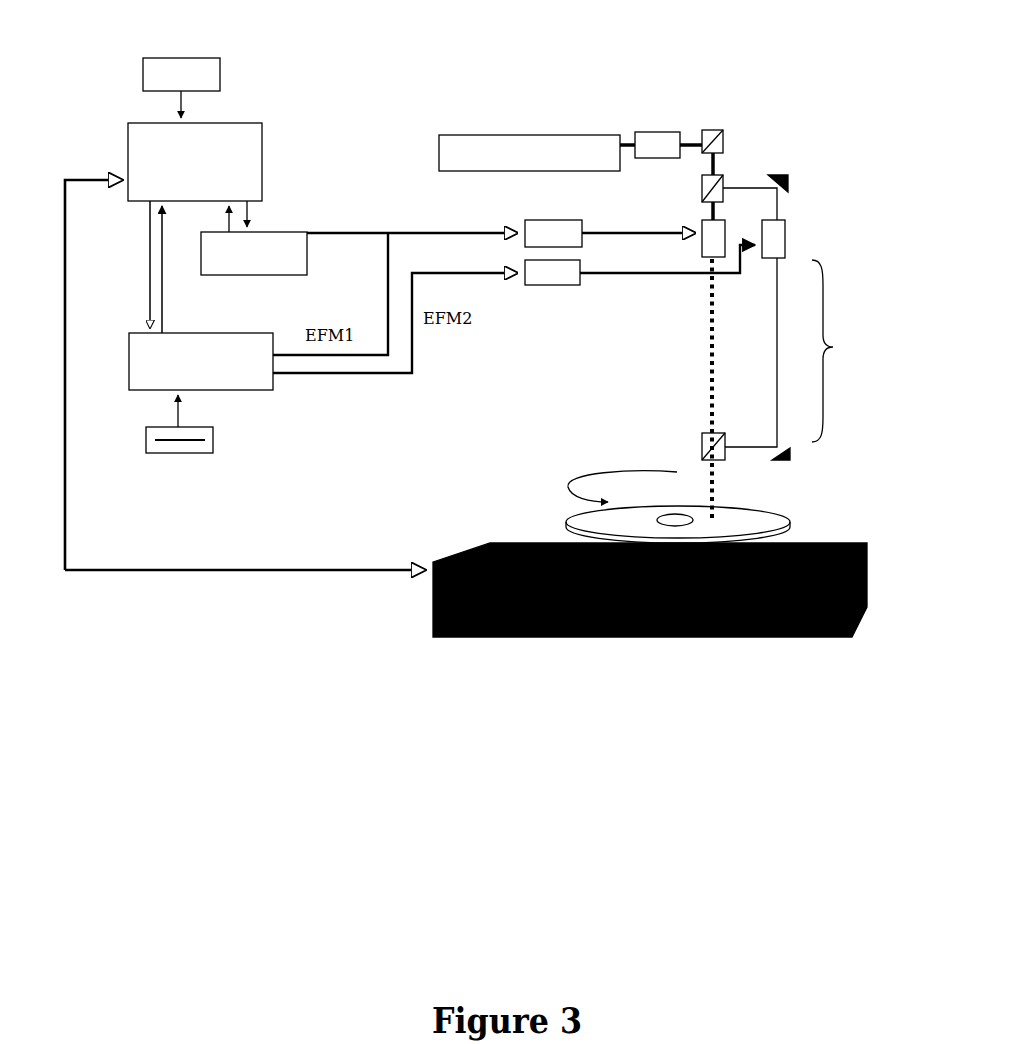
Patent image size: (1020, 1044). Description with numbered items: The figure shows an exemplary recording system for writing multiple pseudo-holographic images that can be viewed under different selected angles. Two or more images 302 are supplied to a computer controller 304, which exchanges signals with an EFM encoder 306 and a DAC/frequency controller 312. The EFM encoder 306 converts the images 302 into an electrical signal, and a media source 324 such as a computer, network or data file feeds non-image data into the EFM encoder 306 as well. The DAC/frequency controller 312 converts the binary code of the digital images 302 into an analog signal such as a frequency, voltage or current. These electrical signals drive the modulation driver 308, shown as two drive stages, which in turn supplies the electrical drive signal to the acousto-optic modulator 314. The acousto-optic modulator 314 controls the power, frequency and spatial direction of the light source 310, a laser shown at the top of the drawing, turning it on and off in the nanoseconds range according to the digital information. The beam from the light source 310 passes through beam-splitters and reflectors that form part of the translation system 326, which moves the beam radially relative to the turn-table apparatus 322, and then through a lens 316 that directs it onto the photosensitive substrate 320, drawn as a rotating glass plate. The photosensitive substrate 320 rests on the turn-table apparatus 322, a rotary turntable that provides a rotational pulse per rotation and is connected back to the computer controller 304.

The images 302 is at (208, 58).
The computer controller 304 is at (253, 123).
The EFM encoder 306 is at (247, 390).
The modulation driver 308 is at (575, 247).
The light source 310 is at (530, 135).
The DAC/frequency controller 312 is at (288, 232).
The acousto-optic modulator 314 is at (713, 238).
The lens 316 is at (702, 445).
The photosensitive substrate 320 is at (782, 517).
The turn-table apparatus 322 is at (863, 587).
The media source 324 is at (213, 440).
The translation system 326 is at (844, 351).